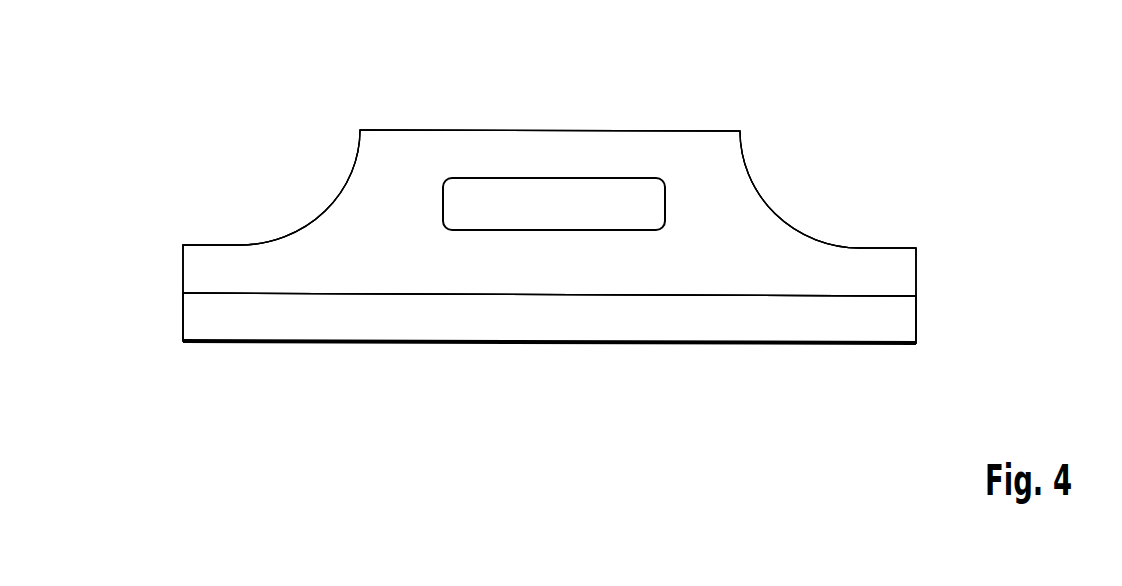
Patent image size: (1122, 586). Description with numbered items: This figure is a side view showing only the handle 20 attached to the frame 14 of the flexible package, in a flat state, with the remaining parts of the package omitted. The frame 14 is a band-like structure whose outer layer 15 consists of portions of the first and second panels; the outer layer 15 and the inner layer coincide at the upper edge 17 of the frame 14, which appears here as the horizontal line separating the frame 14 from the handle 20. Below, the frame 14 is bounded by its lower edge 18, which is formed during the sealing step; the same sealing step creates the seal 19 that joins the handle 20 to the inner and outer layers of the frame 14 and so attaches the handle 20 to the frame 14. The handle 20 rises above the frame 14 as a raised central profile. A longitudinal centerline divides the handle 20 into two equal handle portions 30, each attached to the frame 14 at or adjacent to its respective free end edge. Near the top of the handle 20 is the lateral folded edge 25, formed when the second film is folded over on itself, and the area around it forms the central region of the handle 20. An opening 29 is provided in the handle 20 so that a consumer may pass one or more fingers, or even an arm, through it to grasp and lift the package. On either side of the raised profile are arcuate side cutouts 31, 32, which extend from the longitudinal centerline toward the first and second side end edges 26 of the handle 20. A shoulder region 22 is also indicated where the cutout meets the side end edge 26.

The frame 14 is at (803, 324).
The outer layer 15 is at (345, 323).
The upper edge 17 is at (392, 293).
The lower edge 18 is at (218, 347).
The seal 19 is at (900, 340).
The handle 20 is at (792, 175).
The shoulder region 22 is at (886, 264).
The lateral folded edge 25 is at (568, 130).
The side end edges 26 is at (183, 253).
The opening 29 is at (603, 205).
The handle portion 30 is at (559, 287).
The side cutout 31 is at (815, 235).
The side cutout 32 is at (305, 222).